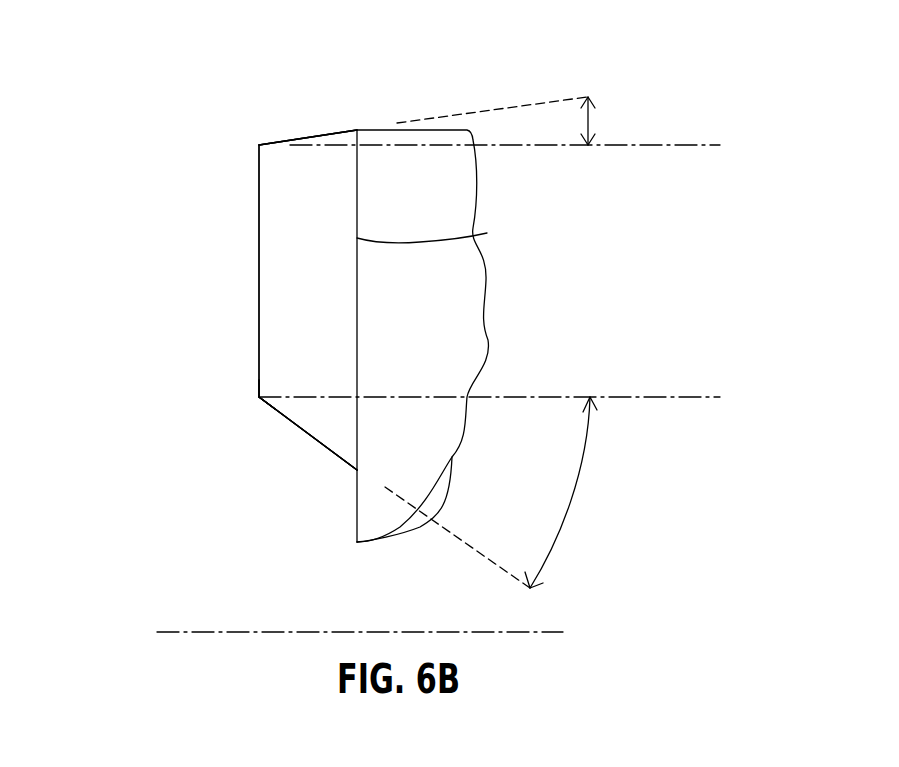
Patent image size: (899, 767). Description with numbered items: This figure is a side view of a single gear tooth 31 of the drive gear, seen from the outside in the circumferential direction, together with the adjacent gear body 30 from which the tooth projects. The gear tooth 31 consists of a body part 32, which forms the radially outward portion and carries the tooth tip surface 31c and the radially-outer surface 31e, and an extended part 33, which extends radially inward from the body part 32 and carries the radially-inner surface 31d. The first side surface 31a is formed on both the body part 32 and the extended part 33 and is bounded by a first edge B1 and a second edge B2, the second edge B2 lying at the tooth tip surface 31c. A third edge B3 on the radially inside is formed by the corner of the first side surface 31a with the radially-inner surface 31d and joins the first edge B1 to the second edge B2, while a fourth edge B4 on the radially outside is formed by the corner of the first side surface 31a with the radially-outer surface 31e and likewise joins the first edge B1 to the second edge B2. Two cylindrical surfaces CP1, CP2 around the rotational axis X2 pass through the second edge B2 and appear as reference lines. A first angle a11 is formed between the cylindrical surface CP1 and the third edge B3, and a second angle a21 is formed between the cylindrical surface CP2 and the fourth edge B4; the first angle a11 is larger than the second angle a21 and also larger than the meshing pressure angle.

The body 30 is at (450, 277).
The gear tooth 31 is at (220, 138).
The first side surface 31a is at (297, 230).
The tooth tip surface 31c is at (267, 394).
The radially-inner surface 31d is at (308, 433).
The radially-outer surface 31e is at (308, 137).
The body part 32 is at (250, 315).
The extended part 33 is at (320, 468).
The first edge B1 is at (487, 233).
The second edge B2 is at (257, 370).
The third edge B3 is at (283, 422).
The fourth edge B4 is at (294, 138).
The cylindrical surface CP1 is at (521, 400).
The cylindrical surface CP2 is at (536, 148).
The first angle a11 is at (517, 492).
The second angle a21 is at (531, 121).
The rotational axis X2 is at (363, 633).